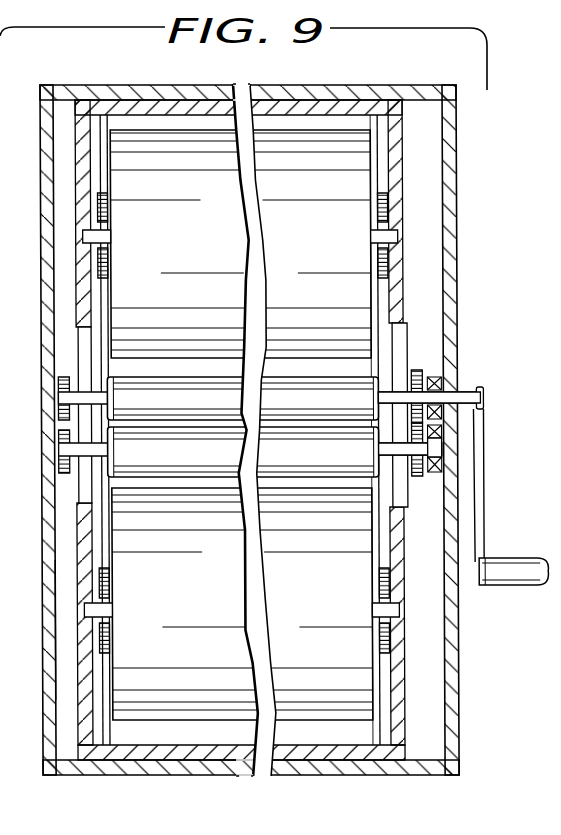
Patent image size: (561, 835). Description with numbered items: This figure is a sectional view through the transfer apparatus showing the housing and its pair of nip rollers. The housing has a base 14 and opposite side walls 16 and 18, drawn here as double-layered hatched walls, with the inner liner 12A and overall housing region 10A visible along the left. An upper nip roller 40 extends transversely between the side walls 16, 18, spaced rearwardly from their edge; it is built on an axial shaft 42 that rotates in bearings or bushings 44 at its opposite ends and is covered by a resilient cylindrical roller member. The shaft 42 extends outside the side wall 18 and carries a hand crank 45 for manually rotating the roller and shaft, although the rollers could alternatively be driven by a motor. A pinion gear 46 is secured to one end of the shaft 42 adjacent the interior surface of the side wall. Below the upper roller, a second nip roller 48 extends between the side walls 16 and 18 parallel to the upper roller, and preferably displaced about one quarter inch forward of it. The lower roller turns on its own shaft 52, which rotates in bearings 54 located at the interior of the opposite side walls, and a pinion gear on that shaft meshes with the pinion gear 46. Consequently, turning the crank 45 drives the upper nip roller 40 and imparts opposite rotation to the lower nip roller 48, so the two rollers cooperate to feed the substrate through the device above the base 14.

The base 14 is at (82, 777).
The side wall 16 is at (41, 214).
The side wall 18 is at (484, 152).
The housing assembly 10A is at (29, 630).
The inner liner plate 12A is at (0, 477).
The upper nip roller 40 is at (322, 403).
The second nip roller 48 is at (320, 456).
The axial shaft 42 is at (393, 390).
The pinion gear 46 is at (417, 371).
The bearings or bushings 44 is at (457, 381).
The bearings 54 is at (440, 447).
The shaft 52 is at (403, 462).
The hand crank 45 is at (483, 503).